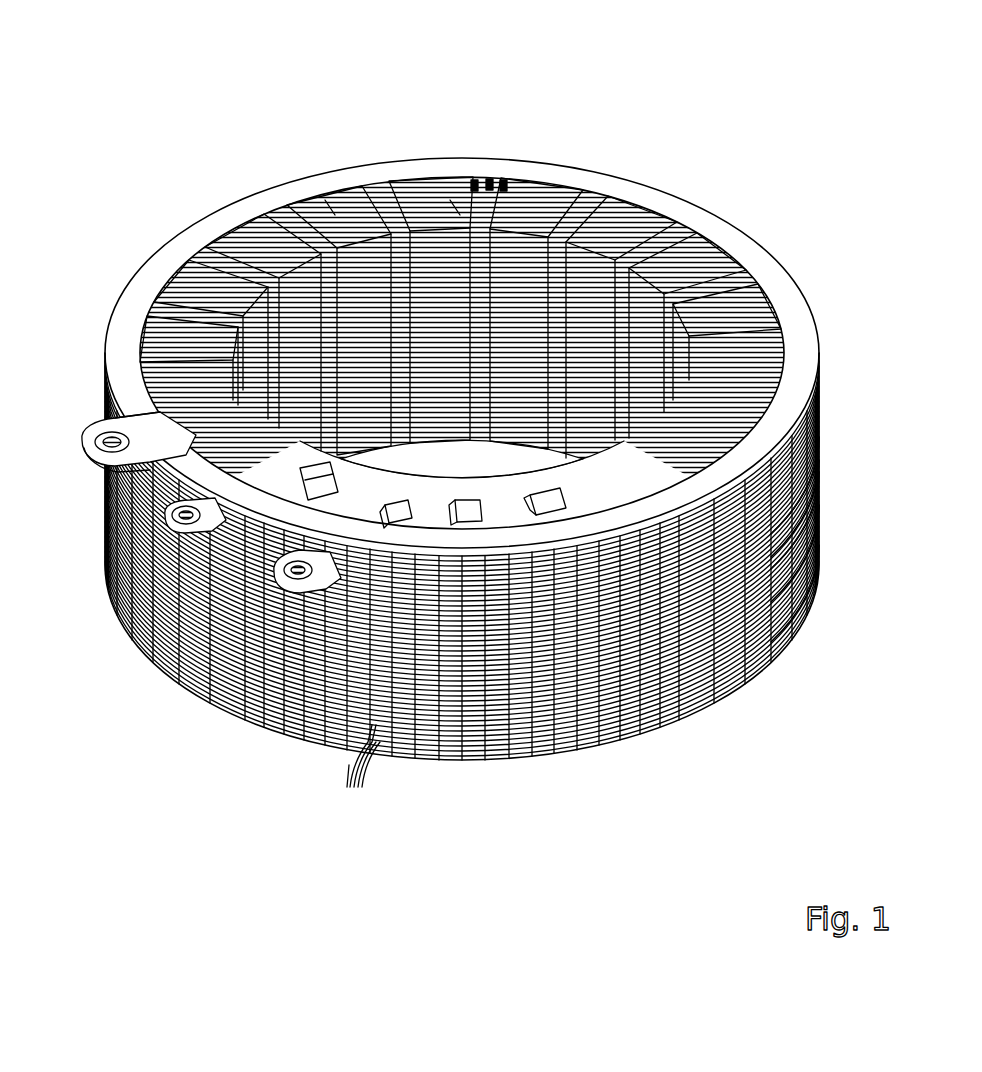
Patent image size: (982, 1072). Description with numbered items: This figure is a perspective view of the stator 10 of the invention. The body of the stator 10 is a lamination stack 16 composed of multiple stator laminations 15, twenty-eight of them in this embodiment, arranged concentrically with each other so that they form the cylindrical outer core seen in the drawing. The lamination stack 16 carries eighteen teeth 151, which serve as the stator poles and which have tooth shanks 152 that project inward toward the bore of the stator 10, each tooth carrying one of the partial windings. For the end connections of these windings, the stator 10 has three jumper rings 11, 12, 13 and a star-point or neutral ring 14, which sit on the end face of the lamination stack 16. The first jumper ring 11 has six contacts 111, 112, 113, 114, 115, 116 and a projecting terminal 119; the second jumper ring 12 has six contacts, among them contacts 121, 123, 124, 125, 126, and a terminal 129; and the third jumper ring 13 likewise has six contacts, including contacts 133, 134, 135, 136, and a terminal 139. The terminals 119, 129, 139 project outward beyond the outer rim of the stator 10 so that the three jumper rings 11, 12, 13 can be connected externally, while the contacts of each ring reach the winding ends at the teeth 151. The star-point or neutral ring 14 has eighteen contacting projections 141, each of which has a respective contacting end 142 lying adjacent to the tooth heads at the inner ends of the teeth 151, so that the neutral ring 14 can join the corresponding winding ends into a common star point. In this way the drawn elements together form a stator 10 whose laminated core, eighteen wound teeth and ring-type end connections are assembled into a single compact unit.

The stator 10 is at (183, 188).
The jumper ring 11 is at (817, 437).
The jumper ring 12 is at (820, 460).
The jumper ring 13 is at (820, 472).
The star-point or neutral ring 14 is at (820, 505).
The stator laminations 15 is at (363, 772).
The lamination stack 16 is at (527, 730).
The contact 111 is at (107, 412).
The contact 112 is at (423, 527).
The contact 113 is at (820, 545).
The contact 114 is at (755, 287).
The contact 115 is at (493, 197).
The contact 116 is at (213, 240).
The projecting terminal 119 is at (88, 455).
The contact 121 is at (322, 467).
The contact 123 is at (812, 435).
The contact 124 is at (687, 247).
The contact 125 is at (383, 197).
The contact 126 is at (150, 327).
The terminal 129 is at (100, 548).
The contact 133 is at (772, 367).
The contact 134 is at (603, 217).
The contact 135 is at (297, 200).
The contact 136 is at (150, 395).
The terminal 139 is at (113, 612).
The contacting projection 141 is at (600, 470).
The contacting end 142 is at (417, 517).
The teeth 151 is at (560, 200).
The tooth shank 152 is at (453, 197).